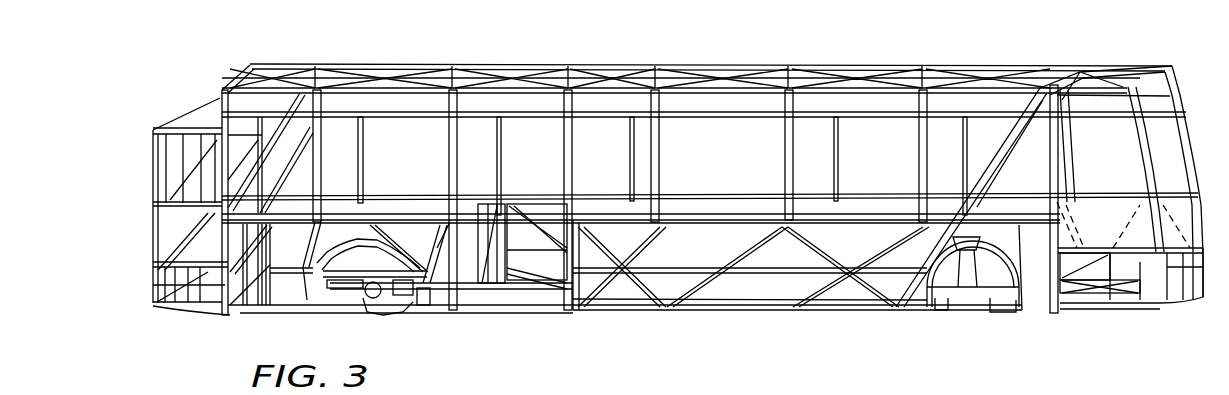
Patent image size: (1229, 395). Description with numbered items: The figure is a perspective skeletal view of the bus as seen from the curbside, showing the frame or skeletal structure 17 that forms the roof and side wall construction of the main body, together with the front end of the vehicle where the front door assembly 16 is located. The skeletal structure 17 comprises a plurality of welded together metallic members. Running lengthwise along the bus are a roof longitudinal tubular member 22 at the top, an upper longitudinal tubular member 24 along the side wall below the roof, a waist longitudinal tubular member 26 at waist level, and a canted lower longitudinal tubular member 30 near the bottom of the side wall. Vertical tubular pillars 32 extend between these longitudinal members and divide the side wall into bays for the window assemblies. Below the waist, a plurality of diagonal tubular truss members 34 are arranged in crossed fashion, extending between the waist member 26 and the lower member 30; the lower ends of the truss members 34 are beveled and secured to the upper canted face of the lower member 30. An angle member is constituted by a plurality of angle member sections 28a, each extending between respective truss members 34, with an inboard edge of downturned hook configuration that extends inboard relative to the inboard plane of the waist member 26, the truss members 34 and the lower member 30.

The front door assembly 16 is at (1125, 153).
The skeletal structure 17 is at (735, 92).
The roof longitudinal tubular member 22 is at (962, 96).
The upper longitudinal tubular member 24 is at (533, 112).
The waist longitudinal tubular member 26 is at (473, 192).
The angle member section 28a is at (652, 280).
The lower longitudinal tubular member 30 is at (858, 314).
The vertical tubular pillars 32 is at (356, 172).
The diagonal tubular truss members 34 is at (808, 253).